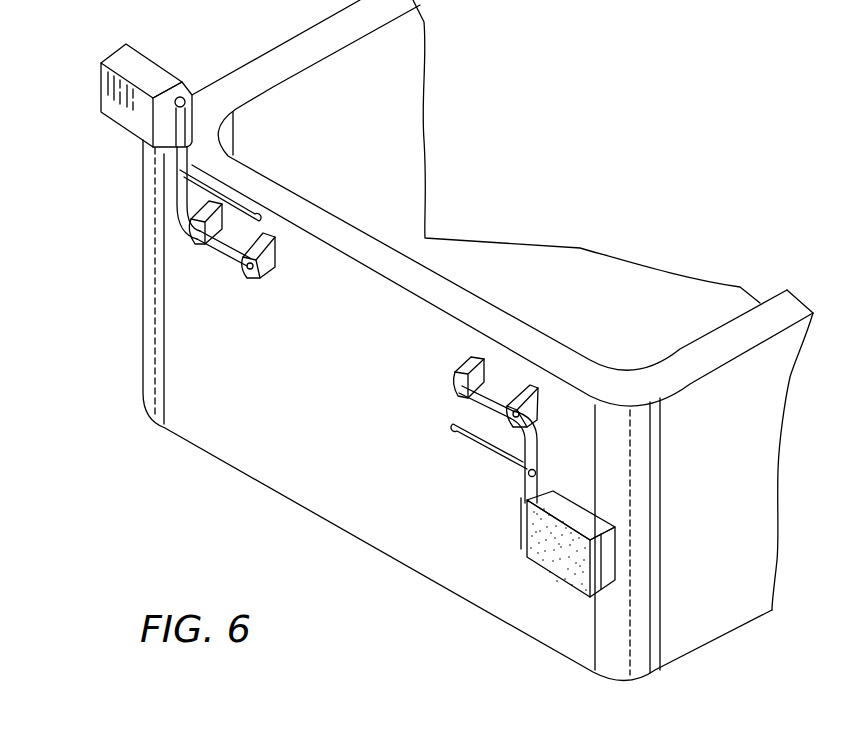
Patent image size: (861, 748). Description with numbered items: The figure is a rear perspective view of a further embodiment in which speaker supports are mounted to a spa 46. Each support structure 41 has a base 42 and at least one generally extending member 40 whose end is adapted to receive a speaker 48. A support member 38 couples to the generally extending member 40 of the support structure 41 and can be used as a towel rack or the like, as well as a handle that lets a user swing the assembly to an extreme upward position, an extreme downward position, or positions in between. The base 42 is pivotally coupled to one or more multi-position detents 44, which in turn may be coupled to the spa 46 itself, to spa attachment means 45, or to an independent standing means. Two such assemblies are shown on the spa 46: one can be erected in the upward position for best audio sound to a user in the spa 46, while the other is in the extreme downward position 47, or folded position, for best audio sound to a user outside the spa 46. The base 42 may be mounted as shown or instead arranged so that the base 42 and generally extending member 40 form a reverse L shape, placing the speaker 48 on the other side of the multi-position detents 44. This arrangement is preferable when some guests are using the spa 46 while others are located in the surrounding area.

The support member 38 is at (184, 188).
The generally extending member 40 is at (180, 164).
The support structure 41 is at (78, 130).
The base 42 is at (221, 262).
The multi-position detents 44 is at (197, 229).
The spa attachment means 45 is at (276, 258).
The spa 46 is at (330, 404).
The extreme downward position 47 is at (593, 424).
The speaker 48 is at (155, 64).